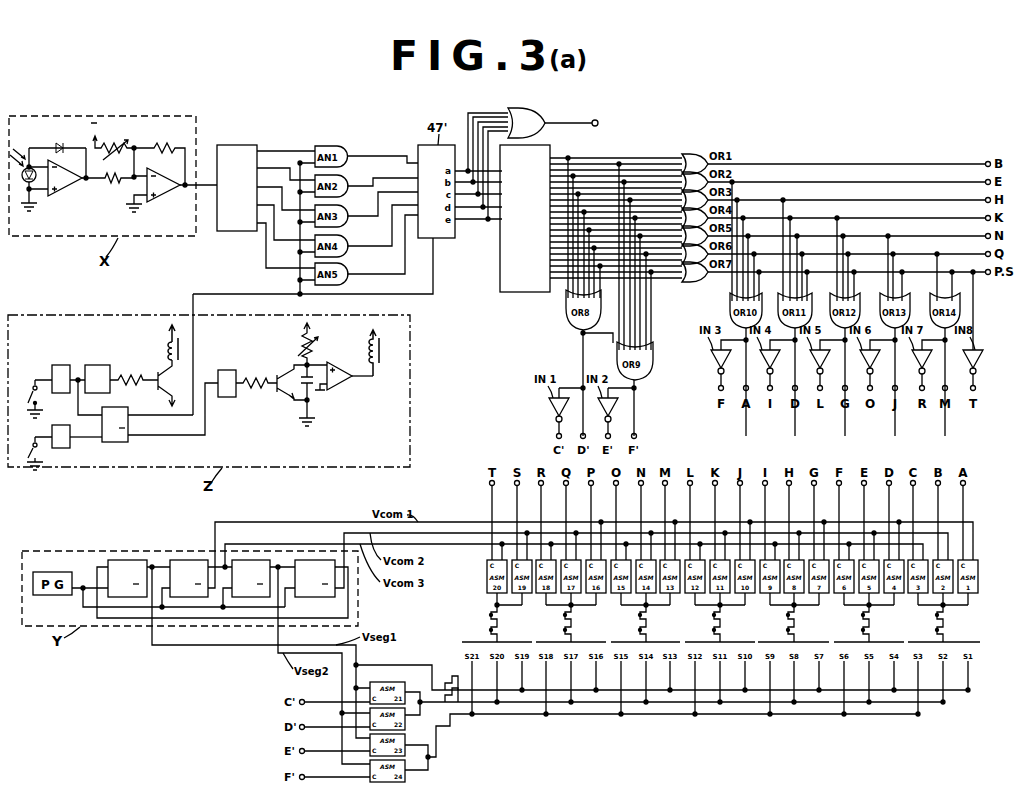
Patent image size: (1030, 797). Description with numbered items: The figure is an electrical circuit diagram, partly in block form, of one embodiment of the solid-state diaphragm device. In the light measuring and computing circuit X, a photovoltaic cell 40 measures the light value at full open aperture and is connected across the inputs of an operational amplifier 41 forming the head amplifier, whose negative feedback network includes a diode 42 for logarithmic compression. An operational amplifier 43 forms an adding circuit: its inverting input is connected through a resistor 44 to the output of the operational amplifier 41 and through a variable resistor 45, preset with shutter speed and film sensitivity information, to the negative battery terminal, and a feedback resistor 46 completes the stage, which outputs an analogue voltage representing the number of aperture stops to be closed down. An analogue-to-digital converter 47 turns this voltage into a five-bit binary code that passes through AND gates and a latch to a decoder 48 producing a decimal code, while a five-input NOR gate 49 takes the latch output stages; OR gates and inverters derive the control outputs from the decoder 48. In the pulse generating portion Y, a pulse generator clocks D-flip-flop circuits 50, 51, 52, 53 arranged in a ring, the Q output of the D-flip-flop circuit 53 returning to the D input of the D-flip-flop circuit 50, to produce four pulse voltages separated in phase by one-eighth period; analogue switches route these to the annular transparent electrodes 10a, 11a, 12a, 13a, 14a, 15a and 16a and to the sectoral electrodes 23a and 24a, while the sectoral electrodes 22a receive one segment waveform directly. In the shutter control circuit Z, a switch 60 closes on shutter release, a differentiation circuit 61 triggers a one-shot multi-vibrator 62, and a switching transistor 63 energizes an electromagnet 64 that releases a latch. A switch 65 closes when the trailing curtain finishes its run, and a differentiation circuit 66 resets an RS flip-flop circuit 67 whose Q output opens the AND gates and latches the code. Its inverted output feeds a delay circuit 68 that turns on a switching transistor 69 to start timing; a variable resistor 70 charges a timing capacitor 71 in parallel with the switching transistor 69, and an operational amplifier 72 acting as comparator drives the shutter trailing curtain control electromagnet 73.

The photovoltaic cell 40 is at (23, 179).
The operational amplifier 41 is at (77, 186).
The diode 42 is at (60, 145).
The operational amplifier 43 is at (166, 196).
The resistor 44 is at (118, 189).
The variable resistor 45 is at (118, 141).
The feedback resistor 46 is at (158, 156).
The A/D converter 47 is at (236, 231).
The decoder 48 is at (503, 258).
The NOR gate 49 is at (534, 108).
The D-flip-flop circuit 50 is at (124, 560).
The D-flip-flop circuit 51 is at (186, 560).
The D-flip-flop circuit 52 is at (249, 560).
The D-flip-flop circuit 53 is at (314, 560).
The switch 60 is at (31, 388).
The differentiation circuit 61 is at (60, 365).
The one-shot multi-vibrator 62 is at (97, 365).
The transistor 63 is at (162, 390).
The electromagnet 64 is at (181, 344).
The switch 65 is at (31, 443).
The differentiation circuit 66 is at (70, 445).
The RS flip-flop circuit 67 is at (116, 443).
The delay circuit 68 is at (227, 370).
The switching transistor 69 is at (280, 392).
The variable resistor 70 is at (313, 346).
The timing capacitor 71 is at (311, 385).
The operational amplifier 72 is at (346, 386).
The shutter trailing curtain control electromagnet 73 is at (382, 352).
The annular transparent electrode 10a is at (951, 642).
The annular transparent electrode 11a is at (876, 642).
The annular transparent electrode 12a is at (801, 642).
The transparent electrode 13a is at (726, 642).
The transparent electrode 14a is at (651, 642).
The transparent electrode 15a is at (576, 642).
The transparent electrode 16a is at (502, 642).
The sectoral electrode 22a is at (510, 692).
The sectoral electrode 23a is at (594, 704).
The sectoral electrode 24a is at (672, 716).